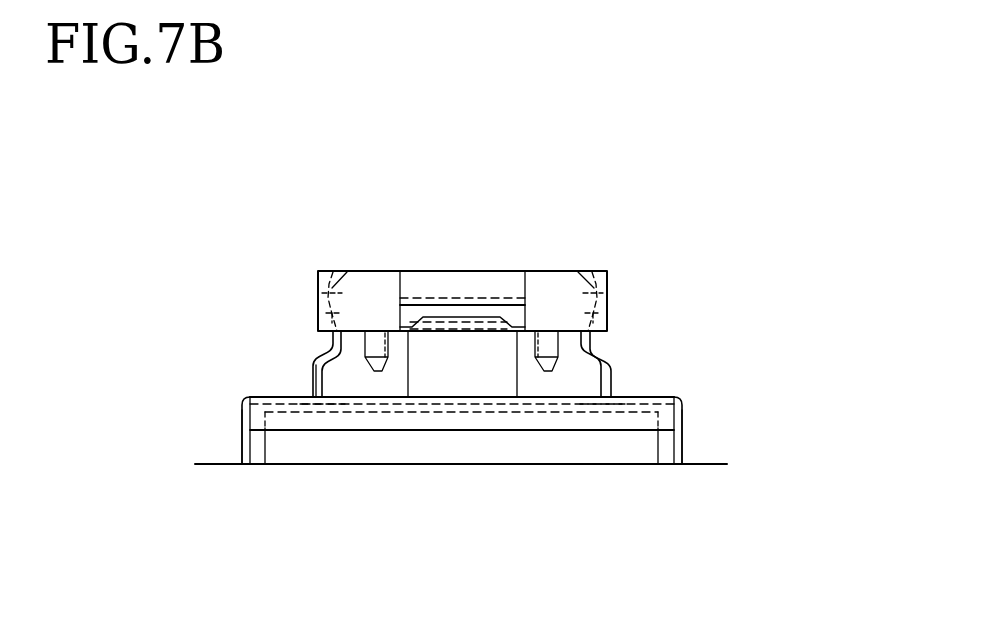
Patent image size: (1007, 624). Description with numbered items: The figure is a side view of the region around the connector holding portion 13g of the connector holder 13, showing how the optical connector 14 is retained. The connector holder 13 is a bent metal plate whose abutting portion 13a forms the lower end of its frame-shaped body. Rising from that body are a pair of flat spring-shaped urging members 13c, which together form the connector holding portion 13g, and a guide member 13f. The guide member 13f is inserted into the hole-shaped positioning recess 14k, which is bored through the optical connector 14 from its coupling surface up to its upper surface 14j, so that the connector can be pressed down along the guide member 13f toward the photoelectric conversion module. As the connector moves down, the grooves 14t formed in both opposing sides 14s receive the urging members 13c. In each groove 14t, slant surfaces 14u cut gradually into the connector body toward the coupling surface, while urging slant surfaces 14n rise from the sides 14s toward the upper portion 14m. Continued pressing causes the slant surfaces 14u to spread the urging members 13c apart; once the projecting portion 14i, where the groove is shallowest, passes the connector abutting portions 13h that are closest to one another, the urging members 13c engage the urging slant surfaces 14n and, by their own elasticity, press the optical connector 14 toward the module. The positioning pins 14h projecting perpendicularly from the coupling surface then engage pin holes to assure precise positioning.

The connector holder 13 is at (688, 405).
The abutting portion 13a is at (245, 464).
The urging member 13c is at (480, 463).
The connector abutting portion 13h is at (339, 334).
The guide member 13f is at (458, 317).
The connector holding portion 13g is at (307, 375).
The optical connector 14 is at (555, 272).
The positioning pin 14h is at (377, 372).
The projecting portion 14i is at (316, 290).
The upper surface 14j is at (520, 201).
The upper portion 14m is at (500, 271).
The positioning recess 14k is at (422, 284).
The urging slant surface 14n is at (334, 271).
The side 14s is at (317, 316).
The groove 14t is at (323, 273).
The slant surface 14u is at (317, 307).